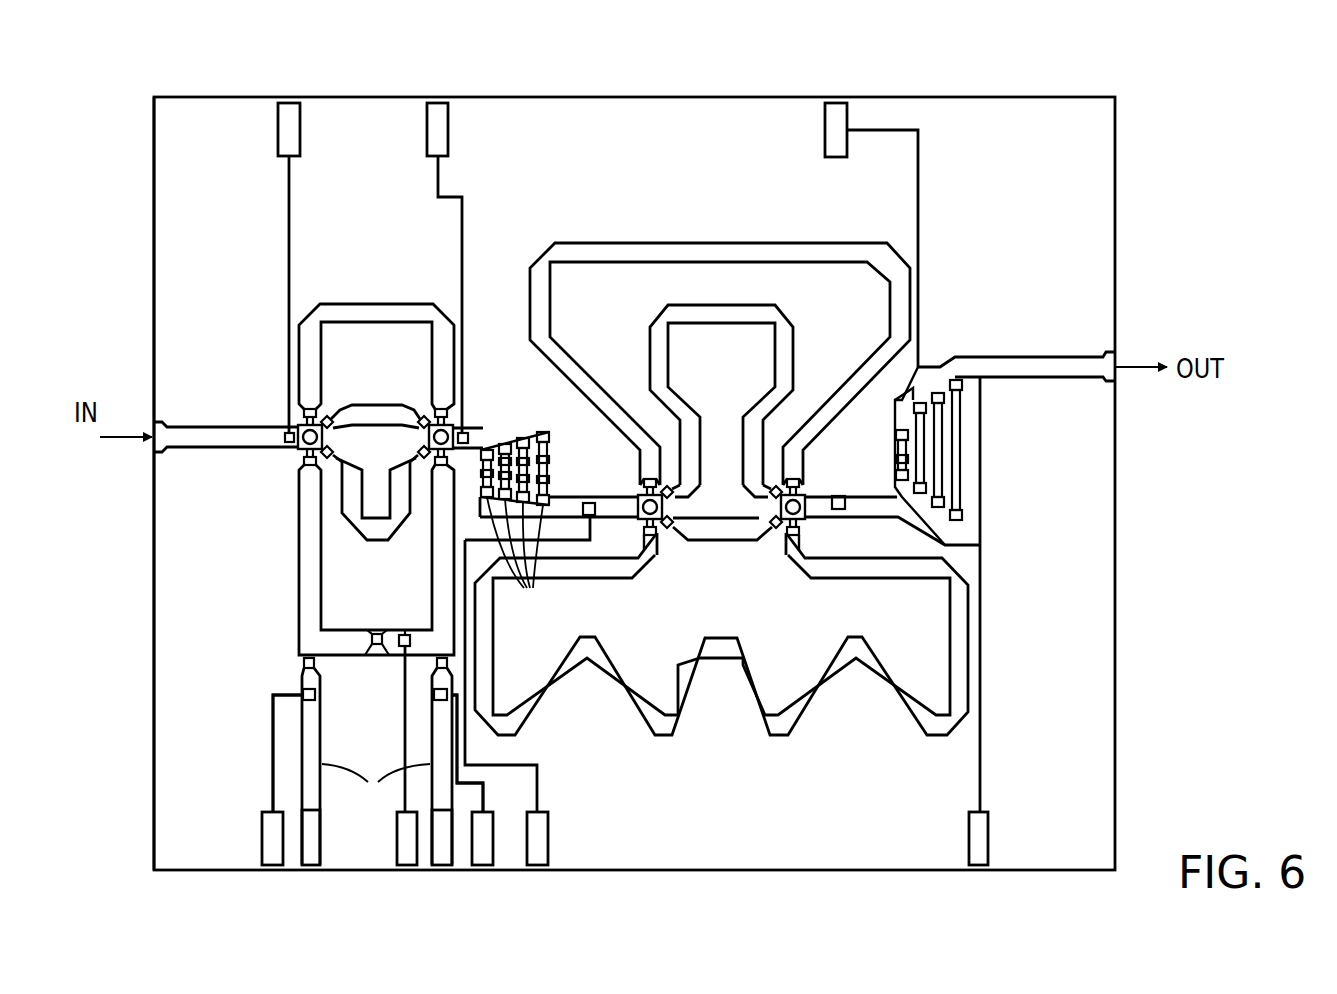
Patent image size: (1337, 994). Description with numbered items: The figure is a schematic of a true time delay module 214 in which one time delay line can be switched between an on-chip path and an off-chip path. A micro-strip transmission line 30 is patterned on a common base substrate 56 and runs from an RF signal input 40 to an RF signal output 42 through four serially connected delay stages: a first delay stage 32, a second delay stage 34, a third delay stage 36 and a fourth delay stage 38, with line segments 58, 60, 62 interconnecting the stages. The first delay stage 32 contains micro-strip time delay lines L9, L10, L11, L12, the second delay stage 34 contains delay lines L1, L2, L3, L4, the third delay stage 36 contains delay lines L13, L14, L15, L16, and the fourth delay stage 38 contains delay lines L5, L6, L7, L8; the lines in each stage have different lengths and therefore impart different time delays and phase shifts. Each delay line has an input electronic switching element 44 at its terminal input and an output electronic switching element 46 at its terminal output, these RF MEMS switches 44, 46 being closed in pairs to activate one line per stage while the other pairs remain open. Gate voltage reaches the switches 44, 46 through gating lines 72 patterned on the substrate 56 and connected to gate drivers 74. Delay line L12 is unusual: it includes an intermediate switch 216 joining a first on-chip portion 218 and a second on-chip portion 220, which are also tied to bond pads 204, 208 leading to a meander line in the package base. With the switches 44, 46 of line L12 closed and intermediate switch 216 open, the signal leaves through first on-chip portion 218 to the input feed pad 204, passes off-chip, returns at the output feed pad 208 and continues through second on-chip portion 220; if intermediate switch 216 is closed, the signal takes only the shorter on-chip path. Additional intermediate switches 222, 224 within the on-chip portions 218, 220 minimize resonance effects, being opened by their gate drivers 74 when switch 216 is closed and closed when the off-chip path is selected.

The TTD module 214 is at (190, 78).
The base substrate 56 is at (190, 290).
The gate drivers 74 is at (300, 128).
The gating lines 72 is at (289, 212).
The micro-strip transmission line 30 is at (192, 427).
The RF signal input 40 is at (140, 449).
The RF signal output 42 is at (1130, 368).
The first delay stage 32 is at (305, 300).
The third delay stage 36 is at (517, 292).
The second delay stage 34 is at (500, 415).
The fourth delay stage 38 is at (940, 360).
The input electronic switching element 44 is at (300, 420).
The output electronic switching element 46 is at (448, 405).
The line segment 58 is at (463, 430).
The line segment 60 is at (611, 519).
The line segment 62 is at (870, 518).
The bond pad 204 is at (308, 868).
The bond pad 208 is at (440, 868).
The intermediate switch 216 is at (383, 633).
The first on-chip portion 218 is at (298, 722).
The second on-chip portion 220 is at (455, 758).
The intermediate switch 222 is at (303, 665).
The intermediate switch 224 is at (403, 652).
The micro-strip time delay line L1 is at (482, 475).
The micro-strip time delay line L2 is at (550, 490).
The micro-strip time delay line L3 is at (550, 468).
The micro-strip time delay line L4 is at (540, 473).
The micro-strip time delay line L5 is at (896, 452).
The micro-strip time delay line L6 is at (920, 470).
The micro-strip time delay line L7 is at (938, 445).
The micro-strip time delay line L8 is at (960, 422).
The micro-strip time delay line L9 is at (362, 404).
The micro-strip time delay line L10 is at (358, 532).
The micro-strip time delay line L11 is at (367, 304).
The micro-strip time delay line L12 is at (376, 796).
The micro-strip time delay line L13 is at (712, 541).
The micro-strip time delay line L14 is at (780, 304).
The micro-strip time delay line L15 is at (868, 263).
The micro-strip time delay line L16 is at (570, 578).